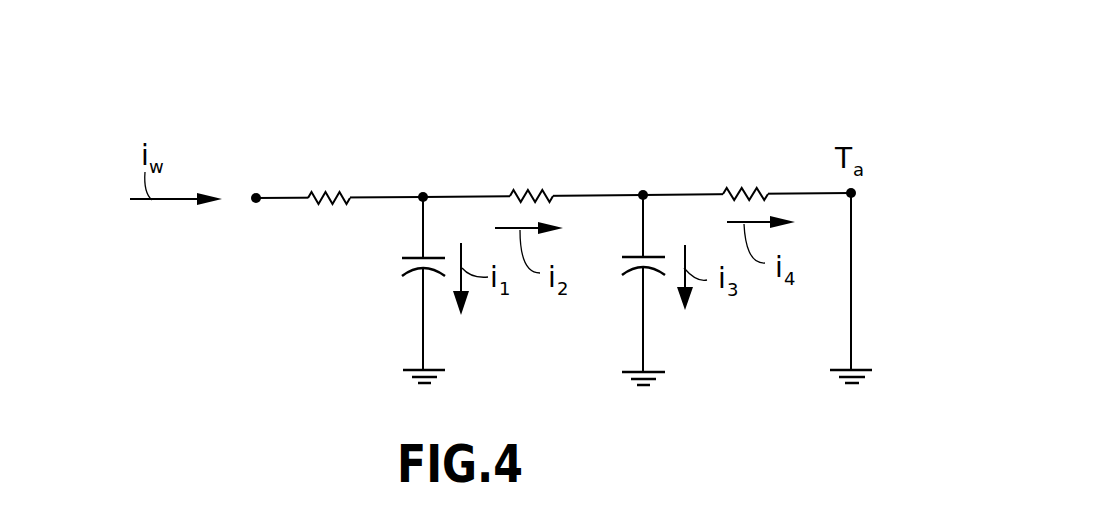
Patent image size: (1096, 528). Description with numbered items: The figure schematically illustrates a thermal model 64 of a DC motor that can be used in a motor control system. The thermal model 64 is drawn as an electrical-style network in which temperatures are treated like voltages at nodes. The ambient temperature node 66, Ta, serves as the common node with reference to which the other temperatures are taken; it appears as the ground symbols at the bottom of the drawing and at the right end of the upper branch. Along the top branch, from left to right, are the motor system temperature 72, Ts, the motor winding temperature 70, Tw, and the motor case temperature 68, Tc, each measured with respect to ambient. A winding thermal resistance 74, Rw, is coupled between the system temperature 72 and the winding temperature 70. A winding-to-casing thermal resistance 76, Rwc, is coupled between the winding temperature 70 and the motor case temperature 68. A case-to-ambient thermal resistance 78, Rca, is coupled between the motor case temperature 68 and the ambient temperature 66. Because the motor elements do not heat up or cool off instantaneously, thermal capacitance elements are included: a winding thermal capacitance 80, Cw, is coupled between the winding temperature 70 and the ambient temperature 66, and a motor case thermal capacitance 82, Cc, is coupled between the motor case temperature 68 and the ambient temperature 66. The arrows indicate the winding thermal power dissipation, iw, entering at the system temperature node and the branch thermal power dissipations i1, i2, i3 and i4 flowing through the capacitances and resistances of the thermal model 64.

The thermal model 64 is at (864, 43).
The ambient temperature node 66 is at (424, 353).
The motor case temperature 68 is at (653, 195).
The motor winding temperature 70 is at (428, 196).
The motor system temperature 72 is at (252, 196).
The winding thermal resistance 74 is at (332, 204).
The winding-to-casing thermal resistance 76 is at (555, 196).
The case-to-ambient thermal resistance 78 is at (770, 193).
The winding thermal capacitance 80 is at (413, 257).
The motor case thermal capacitance 82 is at (634, 256).